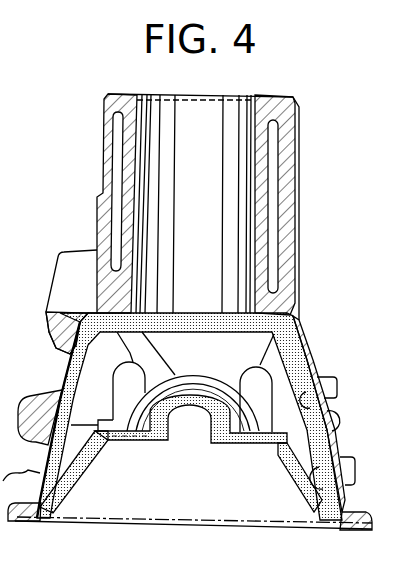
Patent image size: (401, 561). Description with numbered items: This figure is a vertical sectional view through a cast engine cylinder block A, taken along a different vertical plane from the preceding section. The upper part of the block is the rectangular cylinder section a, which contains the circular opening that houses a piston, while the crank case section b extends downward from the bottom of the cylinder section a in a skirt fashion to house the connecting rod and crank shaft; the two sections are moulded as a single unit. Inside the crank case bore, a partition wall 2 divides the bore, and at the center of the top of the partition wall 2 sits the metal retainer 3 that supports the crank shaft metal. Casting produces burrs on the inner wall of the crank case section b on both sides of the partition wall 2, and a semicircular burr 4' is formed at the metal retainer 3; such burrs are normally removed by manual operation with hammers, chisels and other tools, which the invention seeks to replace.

The engine cylinder block A is at (104, 110).
The cylinder section a is at (104, 152).
The crank case section b is at (61, 377).
The partition wall 2 is at (77, 449).
The metal retainer 3 is at (200, 395).
The burr 4' is at (283, 480).